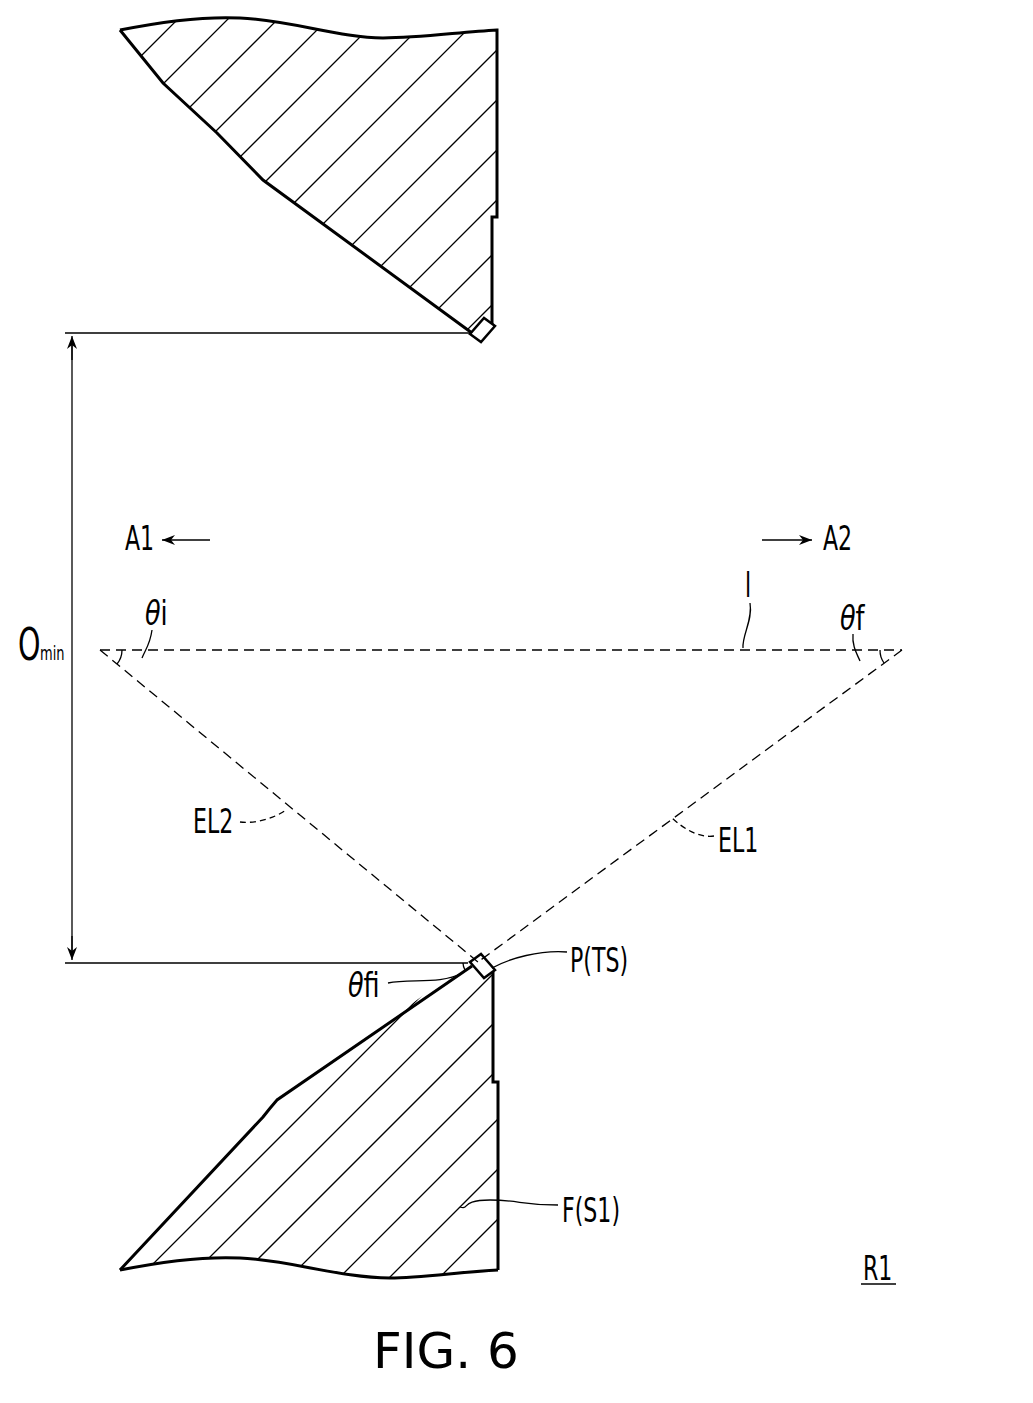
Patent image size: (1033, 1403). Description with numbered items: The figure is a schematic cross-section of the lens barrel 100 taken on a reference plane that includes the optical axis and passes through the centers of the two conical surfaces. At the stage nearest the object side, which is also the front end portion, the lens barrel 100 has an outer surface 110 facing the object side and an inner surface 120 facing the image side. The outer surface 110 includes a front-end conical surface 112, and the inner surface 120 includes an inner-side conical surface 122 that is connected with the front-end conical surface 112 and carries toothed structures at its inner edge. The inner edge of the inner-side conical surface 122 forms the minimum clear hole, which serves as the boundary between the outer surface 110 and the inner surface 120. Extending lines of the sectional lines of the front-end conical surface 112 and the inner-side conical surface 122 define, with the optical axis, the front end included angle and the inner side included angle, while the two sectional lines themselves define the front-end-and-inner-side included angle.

The lens barrel 100 is at (760, 96).
The outer surface 110 is at (180, 1197).
The front-end conical surface 112 is at (340, 1054).
The inner surface 120 is at (499, 1055).
The inner-side conical surface 122 is at (484, 982).